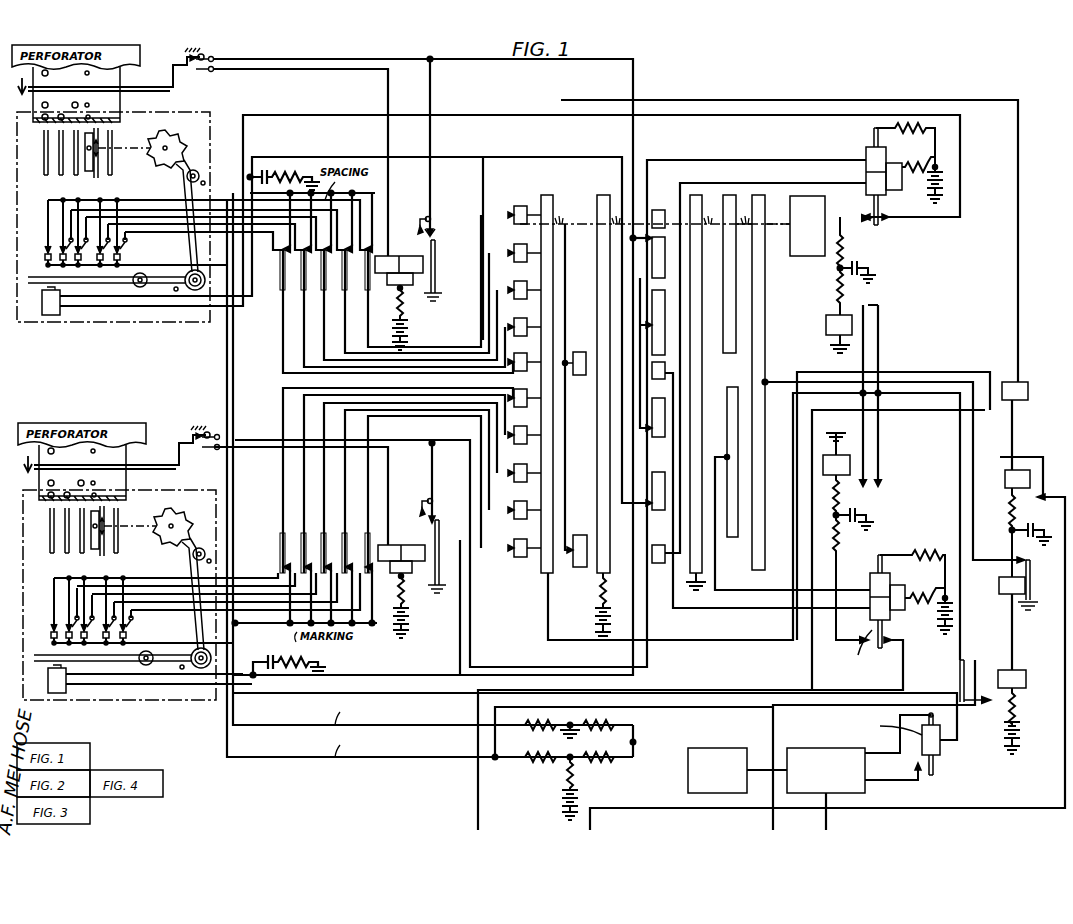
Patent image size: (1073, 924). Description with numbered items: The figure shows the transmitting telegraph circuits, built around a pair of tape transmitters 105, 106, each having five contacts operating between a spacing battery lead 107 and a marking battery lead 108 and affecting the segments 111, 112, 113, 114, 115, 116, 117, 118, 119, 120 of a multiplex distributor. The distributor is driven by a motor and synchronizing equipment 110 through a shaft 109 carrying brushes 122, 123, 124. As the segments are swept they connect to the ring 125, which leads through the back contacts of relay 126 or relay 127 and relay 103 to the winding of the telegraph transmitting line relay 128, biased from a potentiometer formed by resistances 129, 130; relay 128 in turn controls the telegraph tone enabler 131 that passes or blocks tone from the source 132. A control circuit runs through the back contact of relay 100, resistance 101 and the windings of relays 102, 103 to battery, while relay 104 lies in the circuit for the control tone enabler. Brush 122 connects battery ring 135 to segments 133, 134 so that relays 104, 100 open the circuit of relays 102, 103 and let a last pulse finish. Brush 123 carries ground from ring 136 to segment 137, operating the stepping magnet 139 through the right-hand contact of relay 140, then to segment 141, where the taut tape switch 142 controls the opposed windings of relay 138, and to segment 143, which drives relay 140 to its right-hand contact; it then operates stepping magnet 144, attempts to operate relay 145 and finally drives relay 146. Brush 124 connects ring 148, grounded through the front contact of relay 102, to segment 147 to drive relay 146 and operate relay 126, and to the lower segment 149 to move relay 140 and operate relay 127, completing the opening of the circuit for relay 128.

The relay 100 is at (1020, 470).
The resistance 101 is at (1005, 512).
The relay 102 is at (999, 592).
The relay 103 is at (1010, 670).
The relay 104 is at (1028, 395).
The tape transmitter 105 is at (190, 115).
The tape transmitter 106 is at (192, 490).
The spacing battery lead 107 is at (223, 380).
The marking battery lead 108 is at (236, 337).
The shaft 109 is at (610, 195).
The motor and synchronizing equipment 110 is at (806, 196).
The segment 111 is at (513, 222).
The segment 112 is at (513, 260).
The segment 113 is at (530, 294).
The segment 114 is at (530, 327).
The segment 115 is at (530, 370).
The segment 116 is at (530, 405).
The segment 117 is at (530, 441).
The segment 118 is at (530, 479).
The segment 119 is at (512, 512).
The segment 120 is at (512, 548).
The brush 122 is at (586, 228).
The brush 123 is at (670, 215).
The brush 124 is at (745, 218).
The ring 125 is at (540, 195).
The relay 126 is at (826, 330).
The relay 127 is at (850, 470).
The telegraph transmitting line relay 128 is at (942, 757).
The resistance 129 is at (598, 762).
The resistance 130 is at (612, 722).
The telegraph tone enabler 131 is at (800, 762).
The source 132 is at (686, 788).
The segment 133 is at (590, 347).
The segment 134 is at (586, 540).
The ring 135 is at (600, 575).
The ring 136 is at (703, 385).
The segment 137 is at (645, 212).
The relay 138 is at (401, 545).
The stepping magnet 139 is at (57, 693).
The relay 140 is at (888, 620).
The segment 141 is at (650, 292).
The taut tape switch 142 is at (160, 468).
The segment 143 is at (668, 370).
The stepping magnet 144 is at (50, 315).
The relay 145 is at (400, 256).
The relay 146 is at (885, 156).
The segment 147 is at (729, 195).
The ring 148 is at (768, 285).
The segment 149 is at (735, 540).